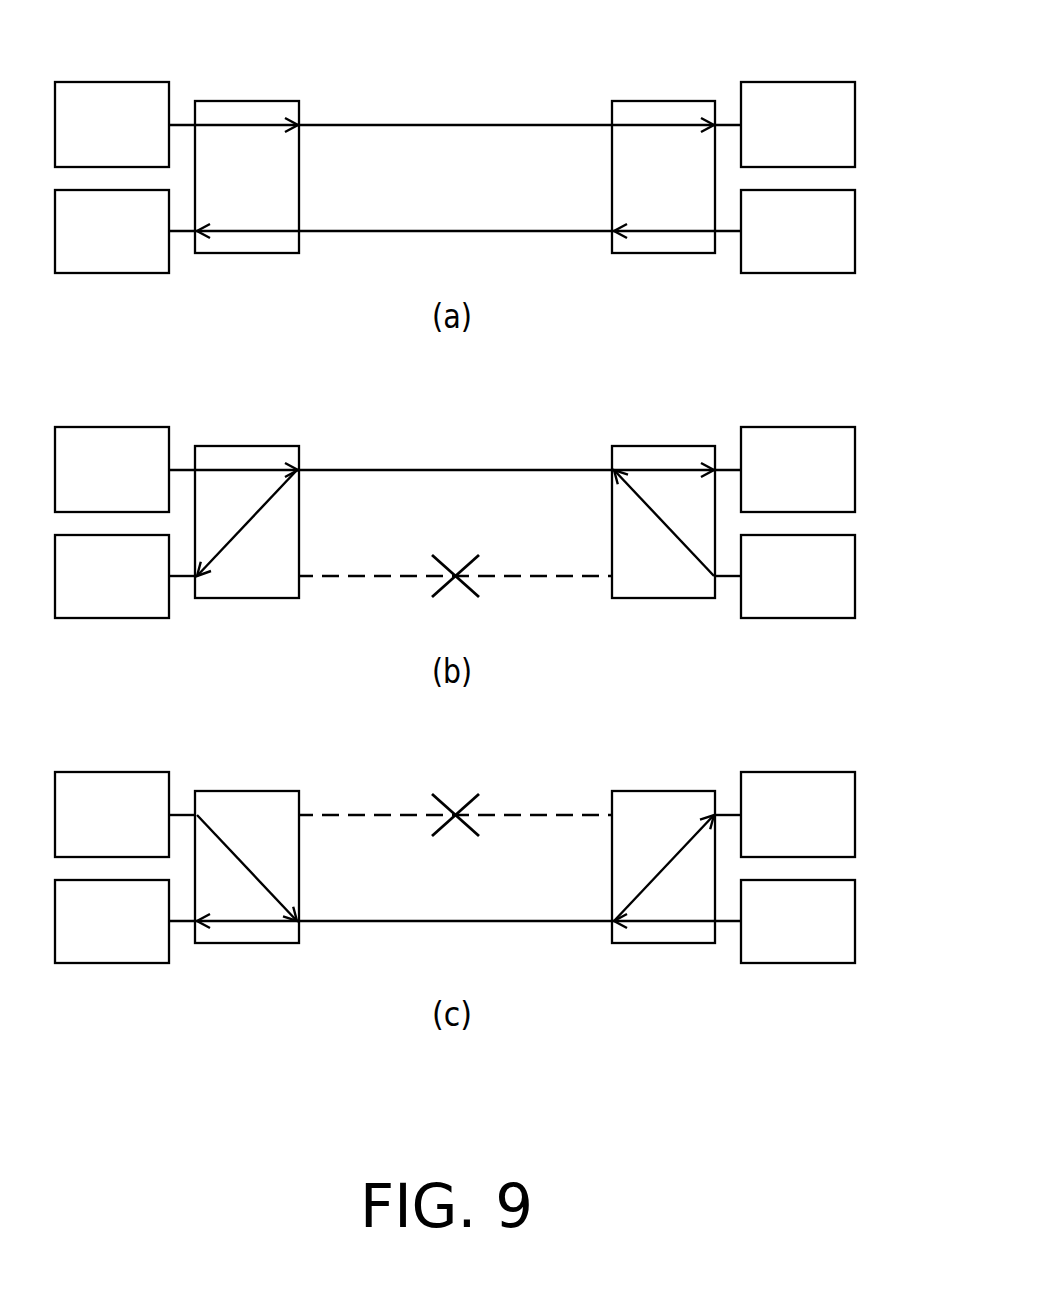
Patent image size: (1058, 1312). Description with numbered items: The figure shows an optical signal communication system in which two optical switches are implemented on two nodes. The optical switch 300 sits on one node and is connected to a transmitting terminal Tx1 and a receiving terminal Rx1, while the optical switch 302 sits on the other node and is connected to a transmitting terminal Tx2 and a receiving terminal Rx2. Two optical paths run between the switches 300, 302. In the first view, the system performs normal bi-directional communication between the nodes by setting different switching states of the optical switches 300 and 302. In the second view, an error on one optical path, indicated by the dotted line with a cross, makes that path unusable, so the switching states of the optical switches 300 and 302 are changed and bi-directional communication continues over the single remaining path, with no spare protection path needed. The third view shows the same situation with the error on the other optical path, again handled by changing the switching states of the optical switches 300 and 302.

The optical switch 300 is at (257, 100).
The optical switch 302 is at (663, 100).
The transmitting terminal Tx1 is at (112, 469).
The receiving terminal Rx1 is at (112, 576).
The receiving terminal Rx2 is at (798, 469).
The transmitting terminal Tx2 is at (798, 576).